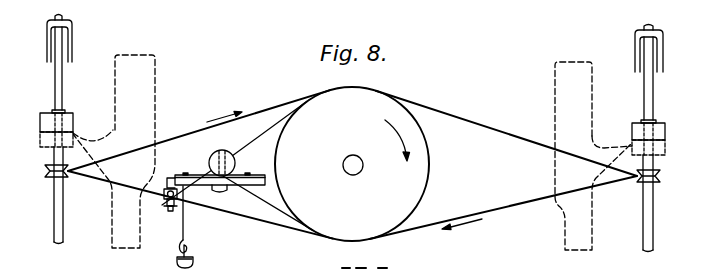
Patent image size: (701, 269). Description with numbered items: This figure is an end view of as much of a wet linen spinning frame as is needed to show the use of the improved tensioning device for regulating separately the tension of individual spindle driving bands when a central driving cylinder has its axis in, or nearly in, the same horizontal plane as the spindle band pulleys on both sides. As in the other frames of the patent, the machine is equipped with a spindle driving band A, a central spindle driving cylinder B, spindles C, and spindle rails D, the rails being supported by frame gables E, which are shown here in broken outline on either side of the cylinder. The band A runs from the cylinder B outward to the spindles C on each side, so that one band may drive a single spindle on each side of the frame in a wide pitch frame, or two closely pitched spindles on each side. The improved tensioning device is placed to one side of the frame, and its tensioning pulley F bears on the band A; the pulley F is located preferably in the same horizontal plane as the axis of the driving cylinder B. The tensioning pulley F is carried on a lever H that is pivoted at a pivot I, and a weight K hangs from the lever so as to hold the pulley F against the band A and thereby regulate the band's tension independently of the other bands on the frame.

The spindle driving band A is at (510, 135).
The spindle driving cylinder B is at (352, 164).
The spindle C is at (53, 213).
The spindle rail D is at (40, 124).
The frame gable E is at (155, 72).
The tensioning pulley F is at (237, 156).
The lever H is at (197, 181).
The pivot I is at (167, 188).
The weight K is at (166, 199).